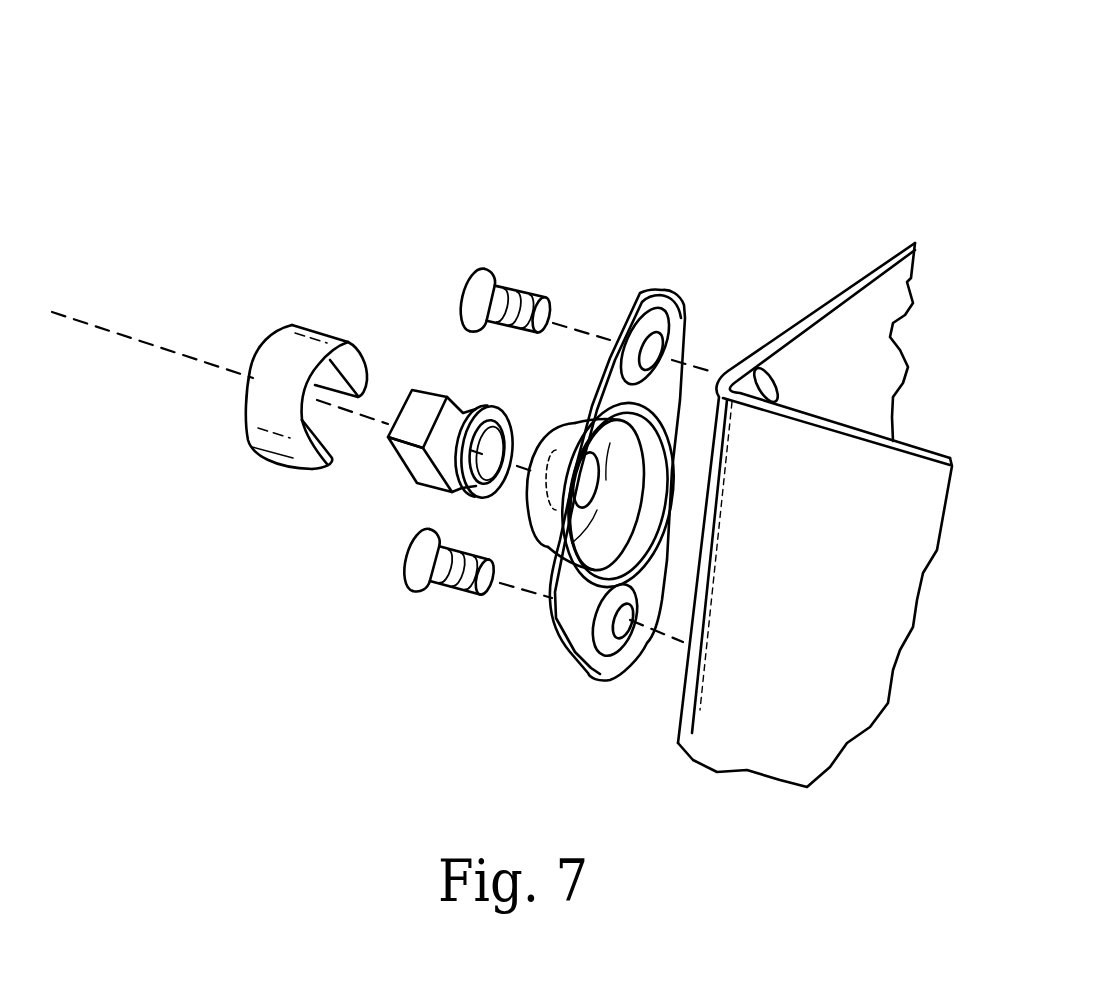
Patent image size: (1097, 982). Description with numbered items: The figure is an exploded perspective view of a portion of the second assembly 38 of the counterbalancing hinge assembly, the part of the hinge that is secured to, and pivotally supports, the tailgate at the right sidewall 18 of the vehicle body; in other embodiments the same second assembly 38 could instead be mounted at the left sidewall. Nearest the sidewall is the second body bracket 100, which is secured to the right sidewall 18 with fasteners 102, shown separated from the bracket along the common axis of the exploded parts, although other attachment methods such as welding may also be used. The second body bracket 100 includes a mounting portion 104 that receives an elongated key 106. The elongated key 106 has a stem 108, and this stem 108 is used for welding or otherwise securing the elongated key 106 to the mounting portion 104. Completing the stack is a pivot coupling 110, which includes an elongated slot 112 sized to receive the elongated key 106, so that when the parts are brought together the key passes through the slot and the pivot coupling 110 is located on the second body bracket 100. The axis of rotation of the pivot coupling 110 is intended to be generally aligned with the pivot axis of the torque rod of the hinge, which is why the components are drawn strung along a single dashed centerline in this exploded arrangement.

The second assembly 38 is at (560, 162).
The right sidewall 18 is at (890, 257).
The second body bracket 100 is at (682, 294).
The fasteners 102 is at (485, 272).
The mounting portion 104 is at (576, 424).
The elongated key 106 is at (413, 470).
The stem 108 is at (494, 405).
The pivot coupling 110 is at (305, 313).
The elongated slot 112 is at (331, 458).